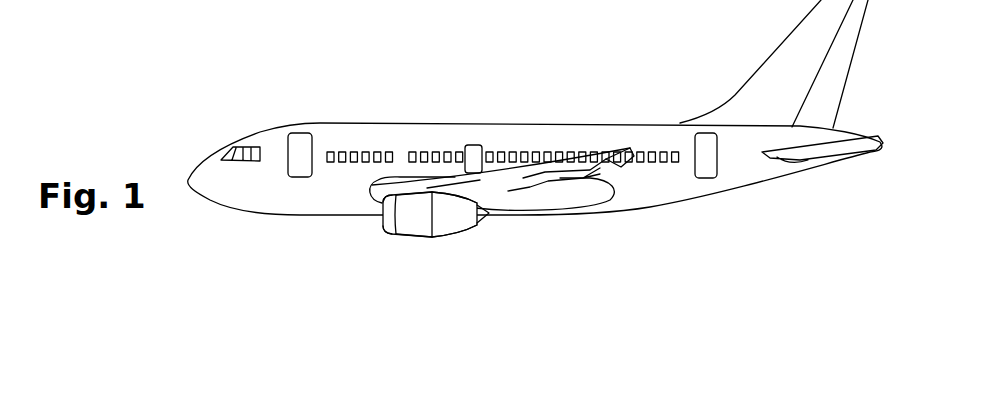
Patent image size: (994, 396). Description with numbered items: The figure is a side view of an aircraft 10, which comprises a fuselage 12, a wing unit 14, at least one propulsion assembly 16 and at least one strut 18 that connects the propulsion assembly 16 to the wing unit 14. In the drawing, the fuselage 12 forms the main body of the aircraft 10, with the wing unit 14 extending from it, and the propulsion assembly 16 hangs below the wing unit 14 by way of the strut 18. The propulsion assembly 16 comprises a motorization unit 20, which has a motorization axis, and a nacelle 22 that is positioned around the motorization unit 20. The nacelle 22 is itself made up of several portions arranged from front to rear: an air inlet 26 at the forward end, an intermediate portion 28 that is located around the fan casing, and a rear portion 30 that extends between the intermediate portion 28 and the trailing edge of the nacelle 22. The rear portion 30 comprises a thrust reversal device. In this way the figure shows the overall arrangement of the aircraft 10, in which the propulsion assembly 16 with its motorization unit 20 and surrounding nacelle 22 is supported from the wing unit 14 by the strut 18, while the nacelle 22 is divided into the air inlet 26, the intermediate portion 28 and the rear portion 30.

The aircraft 10 is at (387, 94).
The fuselage 12 is at (555, 110).
The wing unit 14 is at (520, 164).
The propulsion assembly 16 is at (431, 251).
The strut 18 is at (456, 176).
The motorization unit 20 is at (499, 229).
The nacelle 22 is at (446, 250).
The air inlet 26 is at (369, 234).
The intermediate portion 28 is at (422, 239).
The rear portion 30 is at (469, 236).